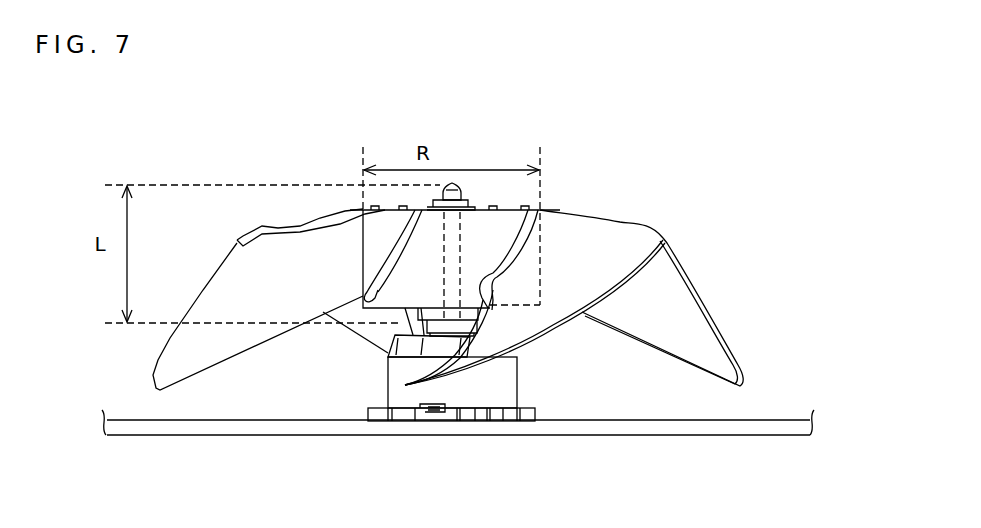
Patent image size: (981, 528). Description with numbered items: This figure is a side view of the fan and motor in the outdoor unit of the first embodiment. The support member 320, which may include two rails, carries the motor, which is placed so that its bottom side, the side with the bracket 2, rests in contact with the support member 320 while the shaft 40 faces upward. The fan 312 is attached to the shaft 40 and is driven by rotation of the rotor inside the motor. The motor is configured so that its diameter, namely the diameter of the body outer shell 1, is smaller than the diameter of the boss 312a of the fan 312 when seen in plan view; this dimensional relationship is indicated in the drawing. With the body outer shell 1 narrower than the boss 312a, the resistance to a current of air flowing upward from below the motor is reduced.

The shaft 40 is at (455, 183).
The boss 312a is at (497, 232).
The fan 312 is at (623, 222).
The body outer shell 1 is at (518, 370).
The bracket 2 is at (537, 412).
The support member 320 is at (728, 435).